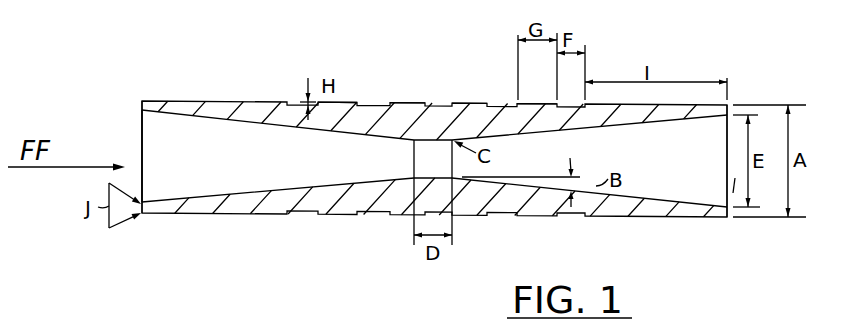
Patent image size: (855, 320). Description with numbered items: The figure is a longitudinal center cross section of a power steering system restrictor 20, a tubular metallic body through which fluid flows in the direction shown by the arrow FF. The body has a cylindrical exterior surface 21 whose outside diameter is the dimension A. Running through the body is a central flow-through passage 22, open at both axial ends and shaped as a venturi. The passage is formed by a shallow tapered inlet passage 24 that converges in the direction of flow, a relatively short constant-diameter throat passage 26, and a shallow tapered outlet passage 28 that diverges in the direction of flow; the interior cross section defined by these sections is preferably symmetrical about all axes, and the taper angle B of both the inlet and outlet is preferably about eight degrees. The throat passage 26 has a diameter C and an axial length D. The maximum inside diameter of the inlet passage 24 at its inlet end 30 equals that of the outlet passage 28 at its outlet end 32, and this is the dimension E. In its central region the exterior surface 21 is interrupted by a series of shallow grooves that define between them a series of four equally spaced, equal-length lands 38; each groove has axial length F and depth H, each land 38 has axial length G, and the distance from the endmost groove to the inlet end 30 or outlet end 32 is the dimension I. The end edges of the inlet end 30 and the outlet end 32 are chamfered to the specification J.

The power steering system restrictor 20 is at (413, 33).
The cylindrical exterior surface 21 is at (240, 214).
The central flow-through passage 22 is at (152, 128).
The tapered inlet passage 24 is at (215, 198).
The throat passage 26 is at (428, 153).
The tapered outlet passage 28 is at (668, 198).
The inlet end 30 is at (142, 146).
The outlet end 32 is at (728, 130).
The lands 38 is at (399, 101).